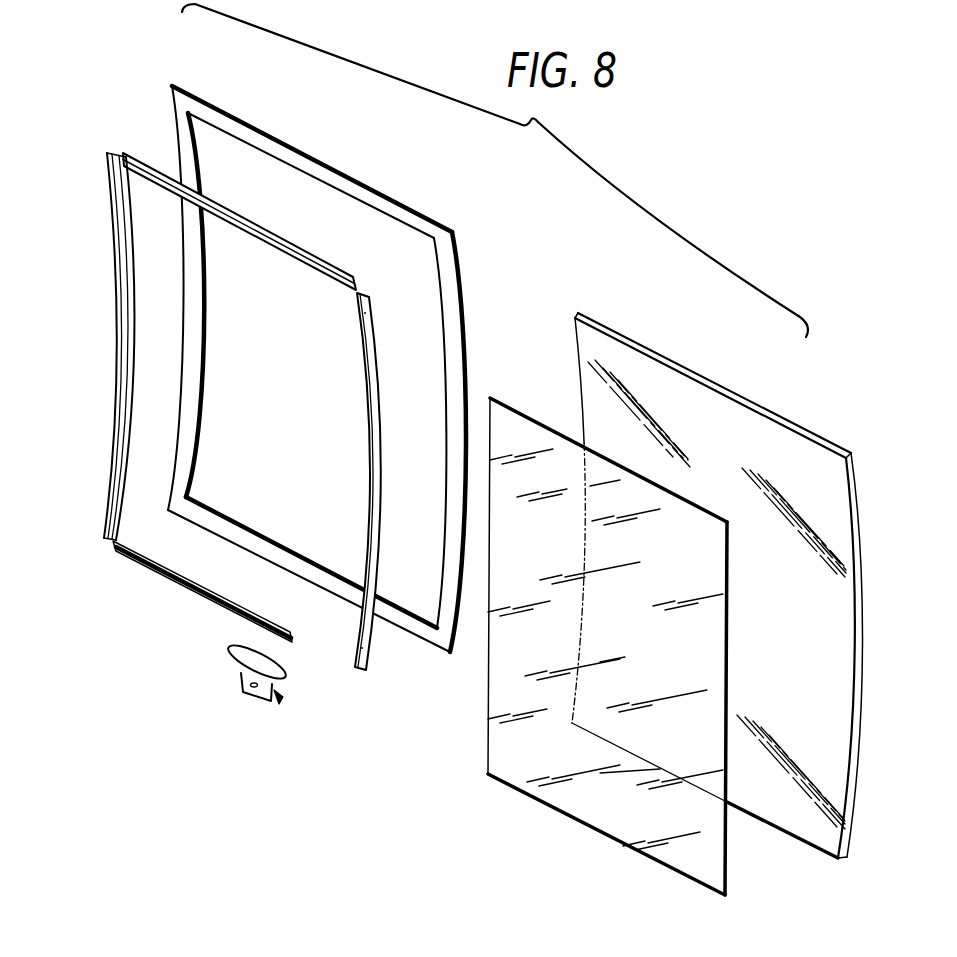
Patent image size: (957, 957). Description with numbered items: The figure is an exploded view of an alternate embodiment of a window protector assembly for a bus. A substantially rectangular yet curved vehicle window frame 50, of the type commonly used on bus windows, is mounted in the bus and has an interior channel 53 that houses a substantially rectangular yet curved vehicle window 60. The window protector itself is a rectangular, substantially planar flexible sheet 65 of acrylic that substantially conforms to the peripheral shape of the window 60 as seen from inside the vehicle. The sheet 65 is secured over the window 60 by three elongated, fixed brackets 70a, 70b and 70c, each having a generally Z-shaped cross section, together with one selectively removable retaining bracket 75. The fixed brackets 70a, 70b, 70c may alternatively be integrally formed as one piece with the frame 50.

The vehicle window frame 50 is at (382, 190).
The interior channel 53 is at (206, 376).
The vehicle window 60 is at (720, 392).
The flexible sheet 65 is at (528, 753).
The fixed bracket 70a is at (121, 382).
The fixed bracket 70b is at (136, 160).
The fixed bracket 70c is at (143, 562).
The retaining bracket 75 is at (372, 520).